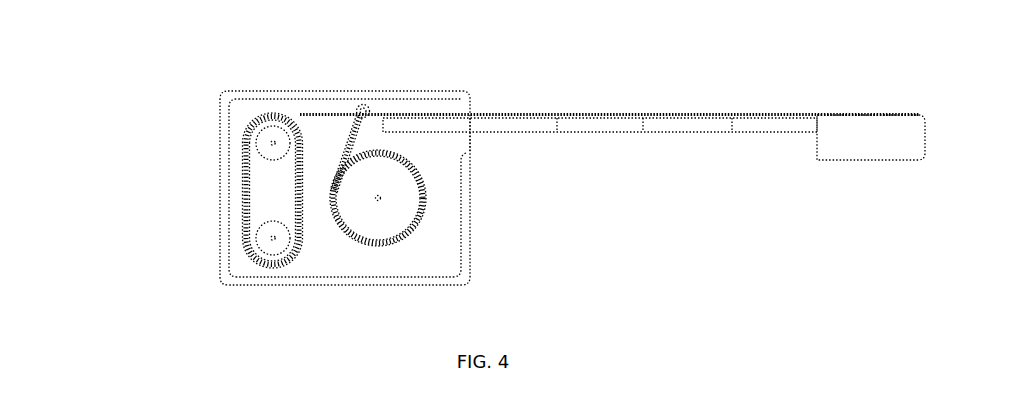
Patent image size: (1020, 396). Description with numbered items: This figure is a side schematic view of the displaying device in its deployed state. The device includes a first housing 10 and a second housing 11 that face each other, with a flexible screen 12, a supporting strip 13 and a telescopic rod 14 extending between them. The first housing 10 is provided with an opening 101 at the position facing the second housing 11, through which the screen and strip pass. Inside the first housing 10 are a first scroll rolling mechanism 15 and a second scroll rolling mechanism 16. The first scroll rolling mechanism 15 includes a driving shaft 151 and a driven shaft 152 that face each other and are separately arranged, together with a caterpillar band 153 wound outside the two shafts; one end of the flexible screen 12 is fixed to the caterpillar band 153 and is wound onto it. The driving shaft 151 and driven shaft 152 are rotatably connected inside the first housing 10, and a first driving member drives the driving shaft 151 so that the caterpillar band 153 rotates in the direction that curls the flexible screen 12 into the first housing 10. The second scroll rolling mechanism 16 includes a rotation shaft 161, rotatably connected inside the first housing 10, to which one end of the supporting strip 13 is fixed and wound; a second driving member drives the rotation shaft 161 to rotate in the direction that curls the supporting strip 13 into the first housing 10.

The first housing 10 is at (272, 92).
The second housing 11 is at (857, 116).
The flexible screen 12 is at (340, 93).
The supporting strip 13 is at (408, 160).
The telescopic rod 14 is at (544, 128).
The first scroll rolling mechanism 15 is at (179, 192).
The second scroll rolling mechanism 16 is at (427, 270).
The opening 101 is at (466, 157).
The driving shaft 151 is at (226, 239).
The driven shaft 152 is at (262, 155).
The caterpillar band 153 is at (302, 222).
The rotation shaft 161 is at (383, 233).